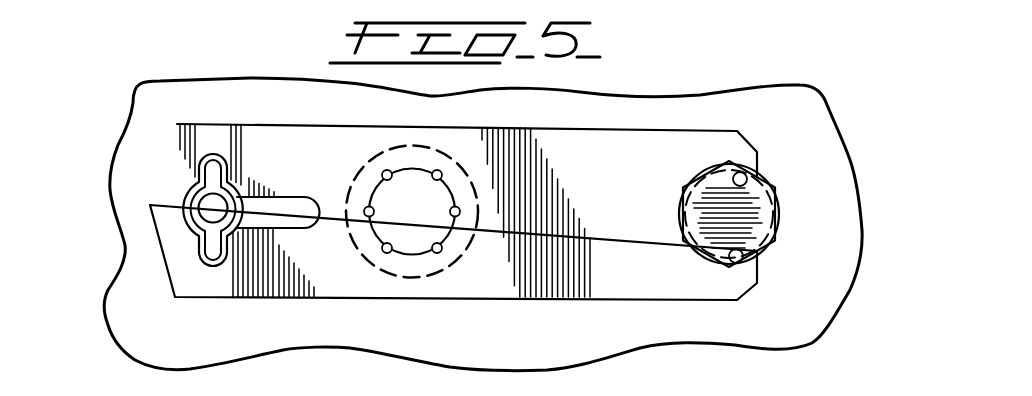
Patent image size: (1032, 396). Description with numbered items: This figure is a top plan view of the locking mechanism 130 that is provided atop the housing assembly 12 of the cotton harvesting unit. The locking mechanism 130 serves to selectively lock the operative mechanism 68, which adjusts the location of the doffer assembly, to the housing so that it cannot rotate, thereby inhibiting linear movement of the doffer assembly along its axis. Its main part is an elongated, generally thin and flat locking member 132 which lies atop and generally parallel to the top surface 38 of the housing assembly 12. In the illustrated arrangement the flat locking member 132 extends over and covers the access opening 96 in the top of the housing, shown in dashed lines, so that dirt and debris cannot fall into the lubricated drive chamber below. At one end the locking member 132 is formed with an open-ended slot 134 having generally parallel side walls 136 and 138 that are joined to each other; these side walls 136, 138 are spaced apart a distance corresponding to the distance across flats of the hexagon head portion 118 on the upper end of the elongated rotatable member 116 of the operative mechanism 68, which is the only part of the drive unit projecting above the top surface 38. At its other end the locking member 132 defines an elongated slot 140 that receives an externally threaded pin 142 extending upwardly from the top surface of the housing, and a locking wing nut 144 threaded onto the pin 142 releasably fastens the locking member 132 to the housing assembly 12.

The housing assembly 12 is at (749, 341).
The top surface 38 is at (808, 118).
The operative mechanism 68 is at (781, 188).
The opening 96 is at (425, 282).
The rotatable member 116 is at (780, 232).
The hexagon head portion 118 is at (772, 243).
The locking mechanism 130 is at (263, 120).
The locking member 132 is at (634, 198).
The open-ended slot 134 is at (703, 240).
The side wall 136 is at (757, 183).
The side wall 138 is at (748, 262).
The elongated slot 140 is at (282, 197).
The externally threaded pin 142 is at (210, 210).
The locking wing nut 144 is at (210, 175).